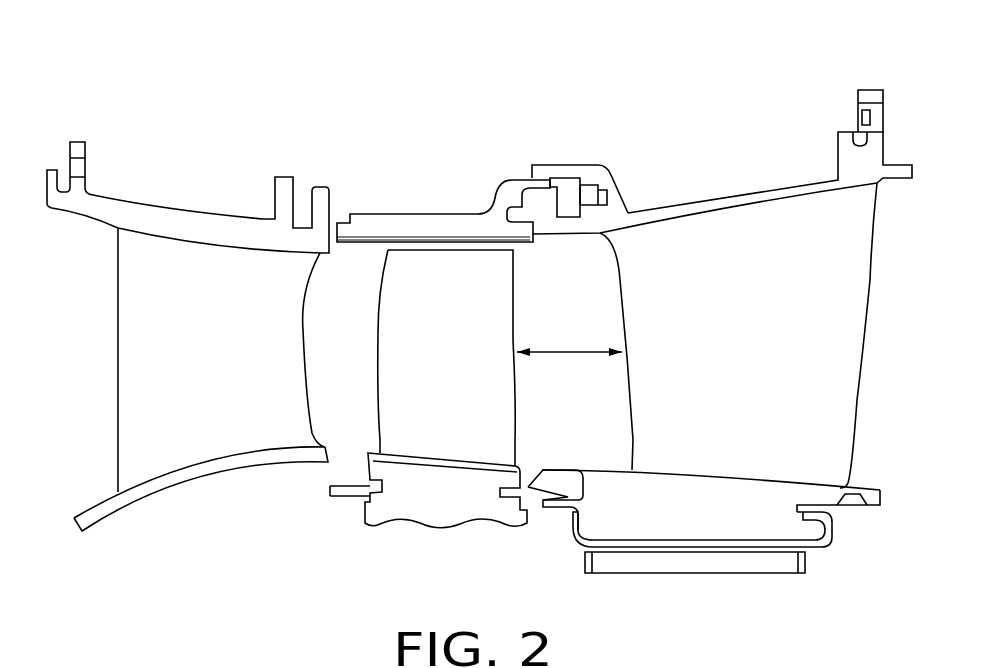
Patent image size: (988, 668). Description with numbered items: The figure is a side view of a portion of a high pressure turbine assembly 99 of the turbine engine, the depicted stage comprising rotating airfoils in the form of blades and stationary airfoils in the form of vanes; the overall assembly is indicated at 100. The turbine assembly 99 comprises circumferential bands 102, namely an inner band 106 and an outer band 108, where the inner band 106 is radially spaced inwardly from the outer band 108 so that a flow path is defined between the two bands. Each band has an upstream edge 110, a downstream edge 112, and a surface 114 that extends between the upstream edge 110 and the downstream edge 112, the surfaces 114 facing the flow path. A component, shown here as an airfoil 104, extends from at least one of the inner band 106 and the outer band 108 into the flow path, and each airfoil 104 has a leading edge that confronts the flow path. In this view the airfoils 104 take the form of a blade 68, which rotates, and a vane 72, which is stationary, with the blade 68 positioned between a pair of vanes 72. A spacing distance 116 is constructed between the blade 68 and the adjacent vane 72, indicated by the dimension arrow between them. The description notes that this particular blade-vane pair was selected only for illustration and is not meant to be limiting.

The turbine section assembly 100 is at (287, 88).
The turbine assembly 99 is at (70, 96).
The band 102 is at (73, 203).
The airfoil 104 is at (153, 287).
The inner band 106 is at (187, 483).
The outer band 108 is at (147, 215).
The upstream edge 110 is at (78, 528).
The downstream edge 112 is at (345, 478).
The surface 114 is at (110, 495).
The spacing distance 116 is at (568, 350).
The vane 72 is at (205, 386).
The blade 68 is at (452, 343).